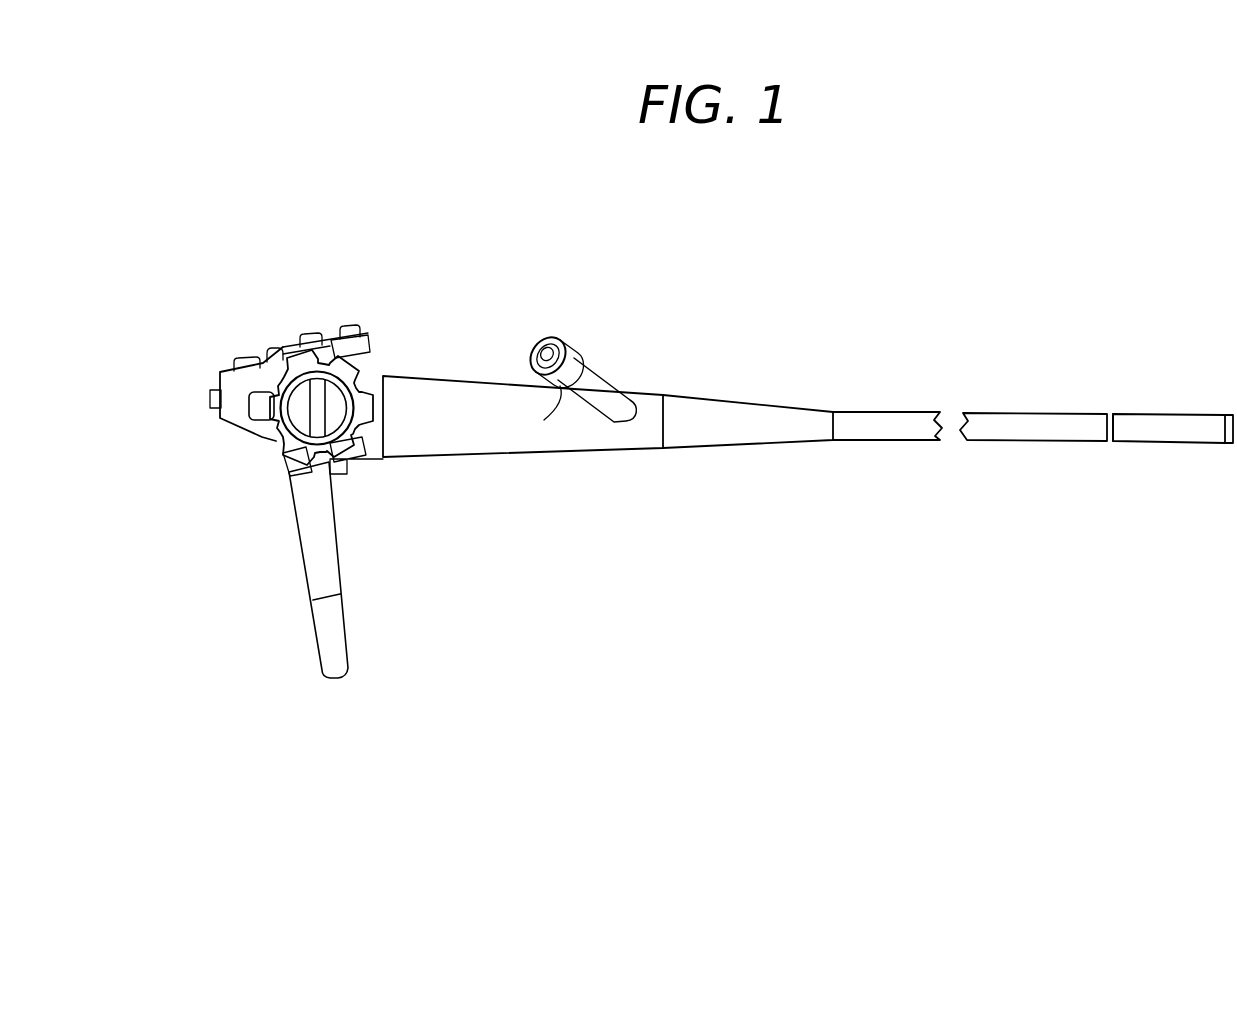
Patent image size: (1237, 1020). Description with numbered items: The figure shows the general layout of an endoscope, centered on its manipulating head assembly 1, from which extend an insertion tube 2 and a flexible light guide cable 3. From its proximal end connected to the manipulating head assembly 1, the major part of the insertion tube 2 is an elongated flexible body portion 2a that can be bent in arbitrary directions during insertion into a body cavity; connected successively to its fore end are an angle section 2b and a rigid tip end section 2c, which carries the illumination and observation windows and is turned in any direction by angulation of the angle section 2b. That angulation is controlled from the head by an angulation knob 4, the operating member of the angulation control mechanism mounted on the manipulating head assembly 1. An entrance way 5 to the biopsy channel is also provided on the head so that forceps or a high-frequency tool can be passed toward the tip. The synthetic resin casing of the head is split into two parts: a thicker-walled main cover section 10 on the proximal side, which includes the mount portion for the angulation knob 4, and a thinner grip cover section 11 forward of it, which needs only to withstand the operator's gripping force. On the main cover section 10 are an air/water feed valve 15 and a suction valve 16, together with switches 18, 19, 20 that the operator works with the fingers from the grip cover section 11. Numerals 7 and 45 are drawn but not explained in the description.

The manipulating head assembly 1 is at (618, 466).
The insertion tube 2 is at (884, 456).
The flexible body portion 2a is at (1023, 436).
The angle section 2b is at (1165, 420).
The rigid tip end section 2c is at (1227, 445).
The flexible light guide cable 3 is at (328, 643).
The angulation knob 4 is at (334, 463).
The entrance way 5 is at (617, 391).
The operation section housing 7 is at (278, 348).
The main cover section 10 is at (375, 403).
The grip cover section 11 is at (485, 442).
The air/water feed valve 15 is at (355, 327).
The suction valve 16 is at (318, 333).
The switch 18 is at (242, 357).
The switch 19 is at (213, 410).
The switch 20 is at (282, 453).
The eyepiece lens 45 is at (579, 340).